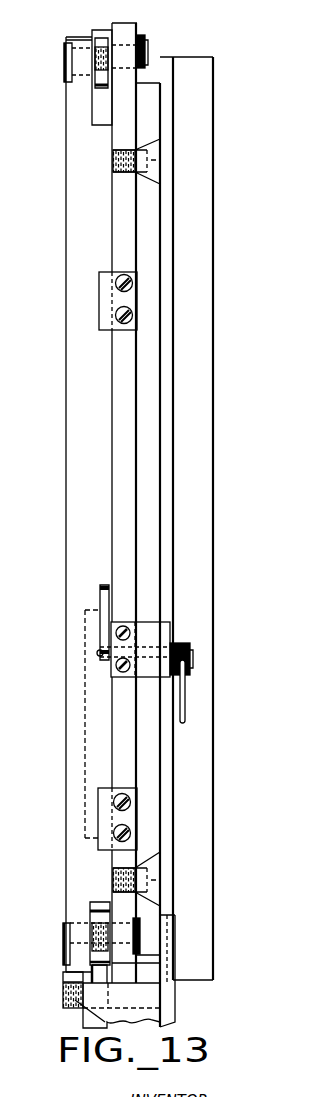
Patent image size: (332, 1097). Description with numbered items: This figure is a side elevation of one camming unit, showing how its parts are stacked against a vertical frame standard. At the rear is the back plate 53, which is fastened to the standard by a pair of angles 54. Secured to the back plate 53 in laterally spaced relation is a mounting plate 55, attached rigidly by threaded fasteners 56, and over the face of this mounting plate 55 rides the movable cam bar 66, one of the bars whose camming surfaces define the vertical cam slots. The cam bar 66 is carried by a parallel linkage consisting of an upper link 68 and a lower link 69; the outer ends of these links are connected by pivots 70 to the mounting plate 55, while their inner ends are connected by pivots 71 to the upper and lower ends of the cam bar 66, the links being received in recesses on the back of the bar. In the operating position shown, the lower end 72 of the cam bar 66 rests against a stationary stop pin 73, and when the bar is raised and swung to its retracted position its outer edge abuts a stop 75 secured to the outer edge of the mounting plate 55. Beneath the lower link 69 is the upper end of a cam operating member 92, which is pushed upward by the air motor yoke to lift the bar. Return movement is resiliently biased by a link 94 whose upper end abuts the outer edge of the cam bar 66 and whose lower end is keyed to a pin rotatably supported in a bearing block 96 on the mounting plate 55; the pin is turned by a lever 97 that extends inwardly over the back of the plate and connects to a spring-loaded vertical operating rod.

The back plate 53 is at (152, 83).
The angles 54 is at (213, 195).
The mounting plates 55 is at (118, 457).
The threaded fasteners 56 is at (113, 172).
The cam bar 66 is at (80, 370).
The upper parallel link 68 is at (96, 30).
The lower parallel link 69 is at (100, 904).
The pivots 70 is at (146, 50).
The pivots 71 is at (64, 68).
The lower end 72 is at (64, 980).
The stop pin 73 is at (68, 978).
The stops 75 is at (99, 272).
The cam operating member 92 is at (110, 973).
The link 94 is at (100, 586).
The bearing block 96 is at (167, 622).
The lever 97 is at (177, 645).